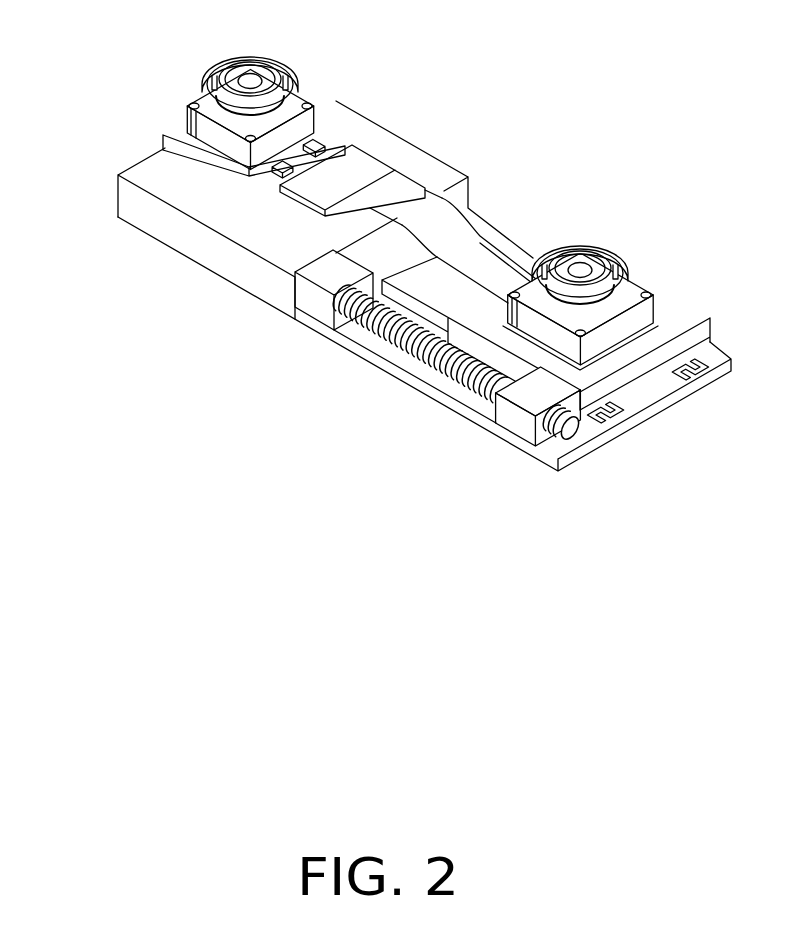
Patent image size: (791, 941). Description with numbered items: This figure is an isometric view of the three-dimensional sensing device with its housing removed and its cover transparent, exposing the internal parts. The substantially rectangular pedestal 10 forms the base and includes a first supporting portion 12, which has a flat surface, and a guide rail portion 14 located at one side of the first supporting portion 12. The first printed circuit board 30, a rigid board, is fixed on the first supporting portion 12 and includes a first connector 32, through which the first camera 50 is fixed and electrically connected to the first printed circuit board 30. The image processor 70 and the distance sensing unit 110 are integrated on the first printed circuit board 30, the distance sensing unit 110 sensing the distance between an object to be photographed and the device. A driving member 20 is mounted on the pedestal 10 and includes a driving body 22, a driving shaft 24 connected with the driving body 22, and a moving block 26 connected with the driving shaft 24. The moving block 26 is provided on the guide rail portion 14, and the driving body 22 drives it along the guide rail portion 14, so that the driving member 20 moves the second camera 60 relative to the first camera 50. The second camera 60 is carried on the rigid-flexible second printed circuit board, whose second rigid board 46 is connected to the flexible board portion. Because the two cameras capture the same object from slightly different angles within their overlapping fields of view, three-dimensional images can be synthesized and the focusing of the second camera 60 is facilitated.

The pedestal 10 is at (631, 126).
The first supporting portion 12 is at (397, 147).
The guide rail portion 14 is at (653, 390).
The driving member 20 is at (388, 498).
The driving body 22 is at (312, 300).
The driving shaft 24 is at (420, 357).
The moving block 26 is at (522, 343).
The first printed circuit board 30 is at (238, 176).
The first connector 32 is at (193, 160).
The second rigid board 46 is at (337, 184).
The first camera 50 is at (250, 82).
The second camera 60 is at (612, 330).
The image processor 70 is at (279, 182).
The distance sensing unit 110 is at (318, 147).